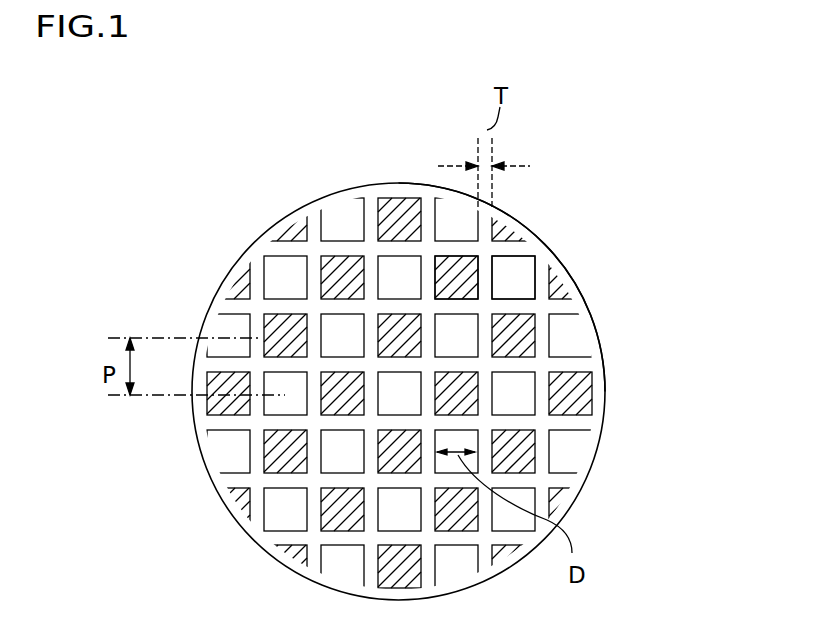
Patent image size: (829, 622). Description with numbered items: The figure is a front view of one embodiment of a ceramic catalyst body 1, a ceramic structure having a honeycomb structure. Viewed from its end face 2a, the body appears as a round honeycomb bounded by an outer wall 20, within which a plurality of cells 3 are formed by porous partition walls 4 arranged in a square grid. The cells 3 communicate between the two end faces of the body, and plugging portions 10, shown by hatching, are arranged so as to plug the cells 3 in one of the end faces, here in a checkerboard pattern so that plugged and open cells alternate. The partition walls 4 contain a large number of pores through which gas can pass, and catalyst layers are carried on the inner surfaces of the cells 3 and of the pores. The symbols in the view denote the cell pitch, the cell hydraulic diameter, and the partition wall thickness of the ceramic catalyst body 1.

The ceramic catalyst body 1 is at (423, 375).
The end face 2a is at (556, 242).
The cell 3 is at (293, 295).
The partition wall 4 is at (487, 293).
The plugging portion 10 is at (282, 449).
The outer wall 20 is at (592, 353).